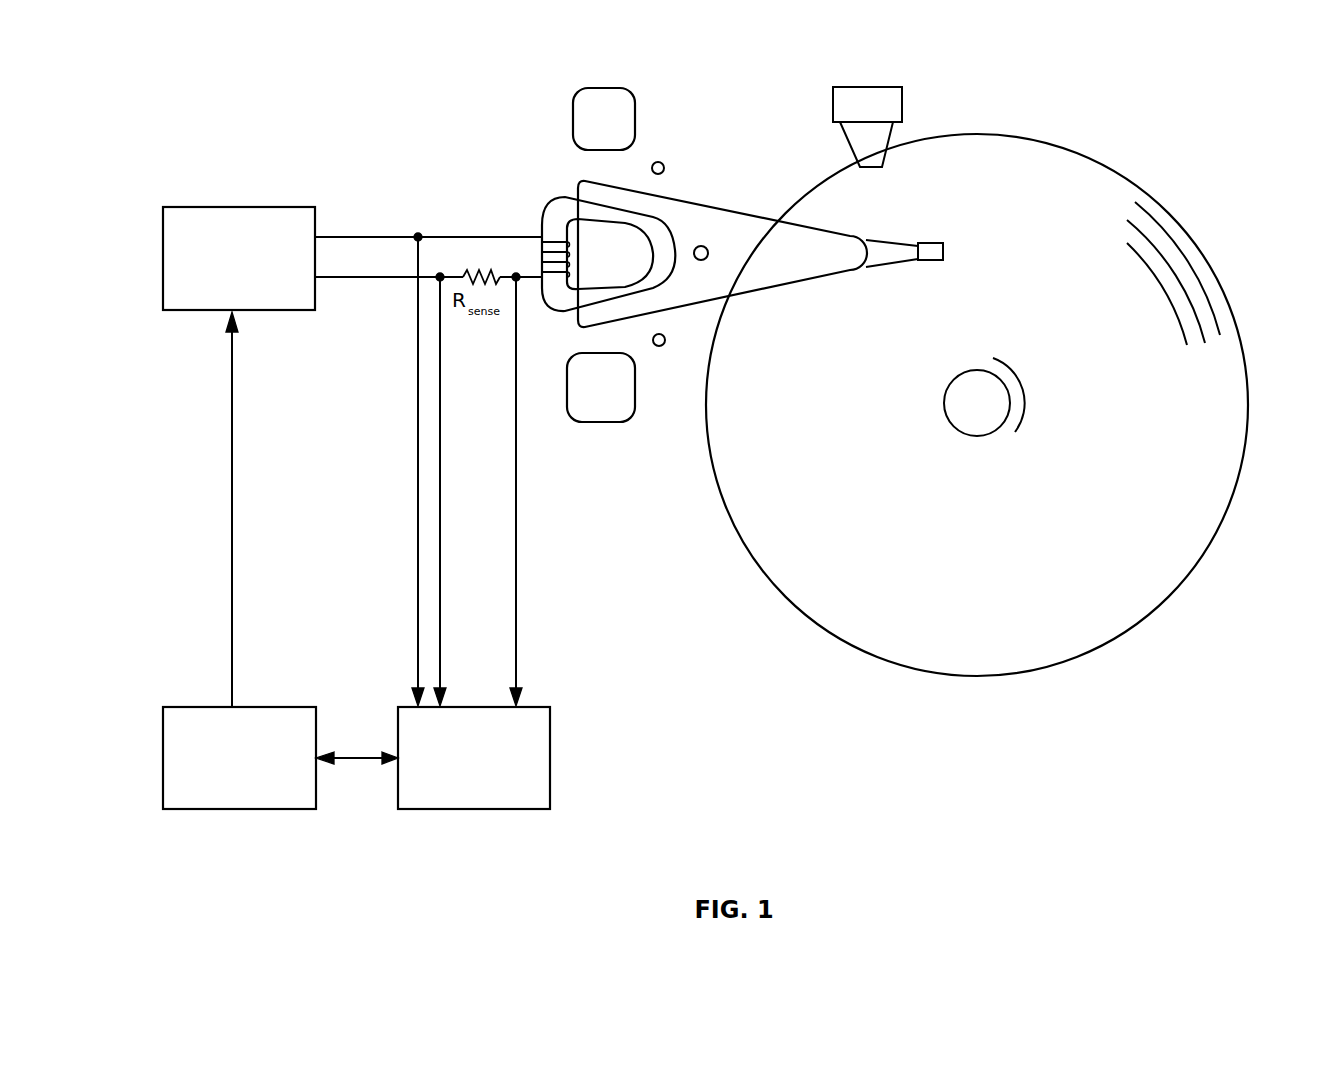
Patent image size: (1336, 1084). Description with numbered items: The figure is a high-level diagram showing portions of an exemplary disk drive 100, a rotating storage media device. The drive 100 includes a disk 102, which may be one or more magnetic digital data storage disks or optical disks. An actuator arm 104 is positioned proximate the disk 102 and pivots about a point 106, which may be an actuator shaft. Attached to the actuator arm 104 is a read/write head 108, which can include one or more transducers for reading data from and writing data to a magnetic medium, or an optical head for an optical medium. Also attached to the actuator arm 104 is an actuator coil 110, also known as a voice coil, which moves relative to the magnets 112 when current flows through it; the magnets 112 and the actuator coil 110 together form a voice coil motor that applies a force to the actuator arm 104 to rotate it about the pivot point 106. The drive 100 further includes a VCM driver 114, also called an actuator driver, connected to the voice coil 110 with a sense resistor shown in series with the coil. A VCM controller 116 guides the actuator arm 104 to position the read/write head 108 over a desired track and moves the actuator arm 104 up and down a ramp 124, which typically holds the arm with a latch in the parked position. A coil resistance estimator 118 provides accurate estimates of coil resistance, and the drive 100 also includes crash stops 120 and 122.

The disk drive 100 is at (1004, 842).
The disk 102 is at (1068, 135).
The actuator arm 104 is at (732, 203).
The pivot point 106 is at (702, 246).
The read/write head 108 is at (935, 233).
The actuator coil 110 is at (539, 223).
The magnets 112 is at (568, 103).
The VCM driver 114 is at (283, 200).
The VCM controller 116 is at (282, 697).
The coil resistance estimator 118 is at (535, 697).
The crash stop 120 is at (667, 343).
The crash stop 122 is at (663, 162).
The ramp 124 is at (893, 138).